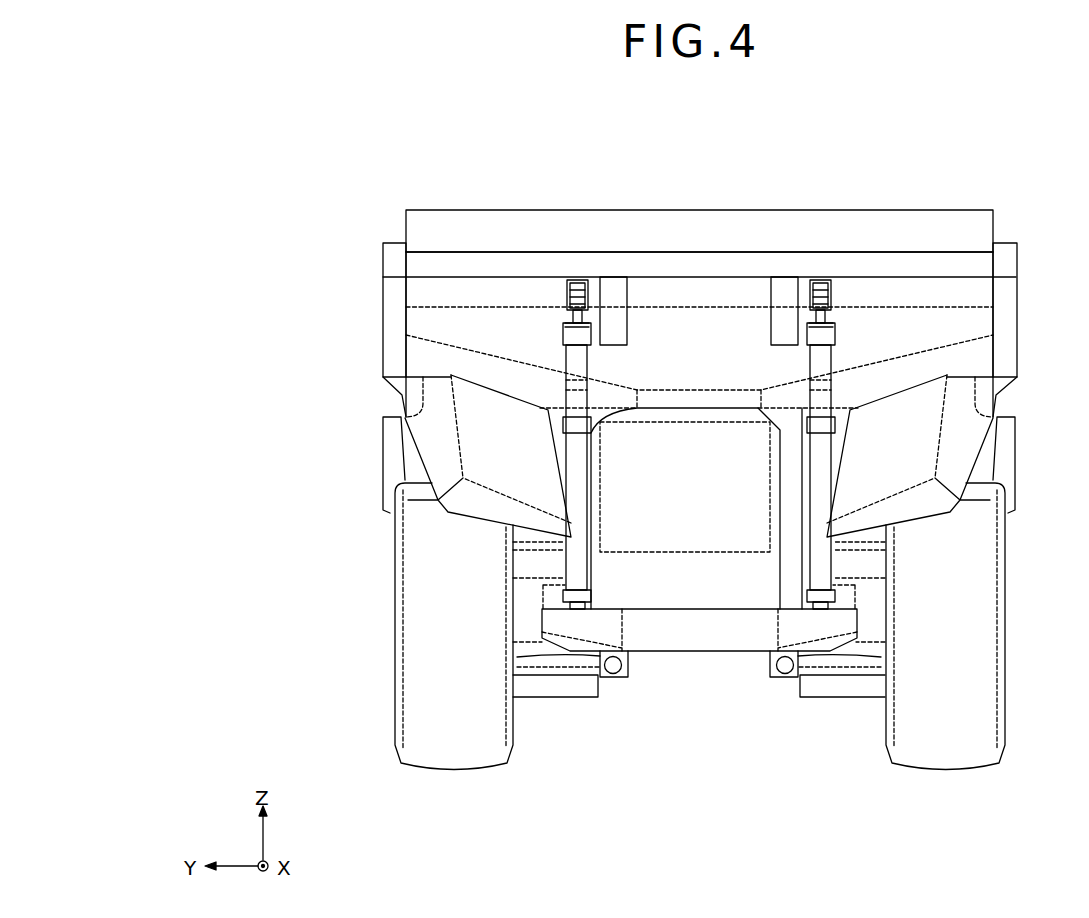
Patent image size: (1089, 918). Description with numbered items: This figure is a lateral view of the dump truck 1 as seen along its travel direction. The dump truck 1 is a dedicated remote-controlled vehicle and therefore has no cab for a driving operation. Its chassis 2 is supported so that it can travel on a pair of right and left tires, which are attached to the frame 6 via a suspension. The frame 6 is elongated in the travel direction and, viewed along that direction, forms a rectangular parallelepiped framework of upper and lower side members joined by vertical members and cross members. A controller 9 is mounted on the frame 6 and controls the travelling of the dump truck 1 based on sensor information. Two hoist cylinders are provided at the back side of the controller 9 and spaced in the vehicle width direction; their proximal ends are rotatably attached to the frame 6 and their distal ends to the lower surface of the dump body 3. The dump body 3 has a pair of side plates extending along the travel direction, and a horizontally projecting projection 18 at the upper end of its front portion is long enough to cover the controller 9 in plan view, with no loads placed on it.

The dump truck 1 is at (700, 437).
The chassis 2 is at (699, 589).
The dump body 3 is at (818, 232).
The frame 6 is at (720, 638).
The controller 9 is at (677, 585).
The projection 18 is at (592, 232).